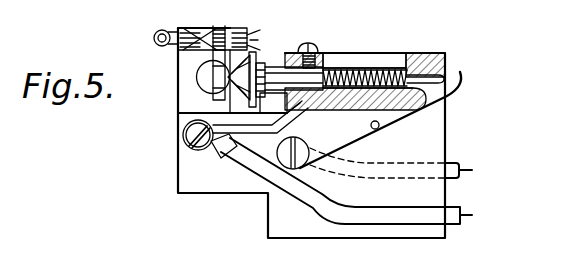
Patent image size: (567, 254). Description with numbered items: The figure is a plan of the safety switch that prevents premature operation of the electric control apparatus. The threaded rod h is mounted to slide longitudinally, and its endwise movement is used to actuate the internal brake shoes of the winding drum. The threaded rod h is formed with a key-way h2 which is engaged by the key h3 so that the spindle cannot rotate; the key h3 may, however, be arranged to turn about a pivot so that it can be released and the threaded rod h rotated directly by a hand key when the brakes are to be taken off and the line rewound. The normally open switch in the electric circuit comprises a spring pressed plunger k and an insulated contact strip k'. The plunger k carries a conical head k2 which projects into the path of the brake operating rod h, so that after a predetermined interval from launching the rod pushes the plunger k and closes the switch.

The threaded rod h is at (202, 66).
The key-way h2 is at (212, 96).
The key h3 is at (247, 32).
The spring pressed plunger k is at (377, 42).
The insulated contact strip k' is at (404, 120).
The conical head k2 is at (245, 110).